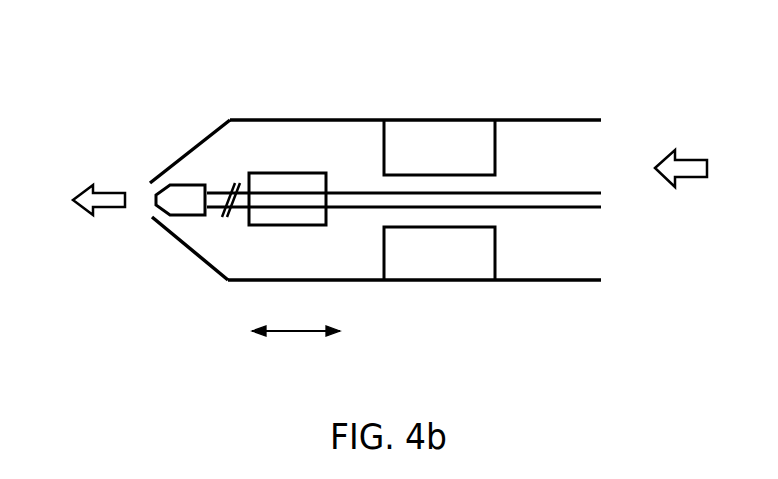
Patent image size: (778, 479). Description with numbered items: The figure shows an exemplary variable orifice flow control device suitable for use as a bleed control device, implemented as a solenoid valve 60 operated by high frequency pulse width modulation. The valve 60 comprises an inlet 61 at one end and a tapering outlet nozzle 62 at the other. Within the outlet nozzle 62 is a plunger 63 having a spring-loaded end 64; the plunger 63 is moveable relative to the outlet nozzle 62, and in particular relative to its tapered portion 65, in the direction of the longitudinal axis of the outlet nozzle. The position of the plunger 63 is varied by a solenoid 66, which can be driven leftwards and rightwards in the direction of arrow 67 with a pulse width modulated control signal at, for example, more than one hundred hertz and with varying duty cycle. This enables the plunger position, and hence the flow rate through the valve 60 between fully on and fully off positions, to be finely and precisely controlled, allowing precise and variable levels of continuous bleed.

The solenoid valve 60 is at (150, 88).
The inlet 61 is at (608, 162).
The tapering outlet nozzle 62 is at (153, 218).
The plunger 63 is at (285, 173).
The spring-loaded end 64 is at (190, 215).
The tapered portion 65 is at (178, 160).
The solenoid 66 is at (439, 147).
The arrow 67 is at (287, 333).